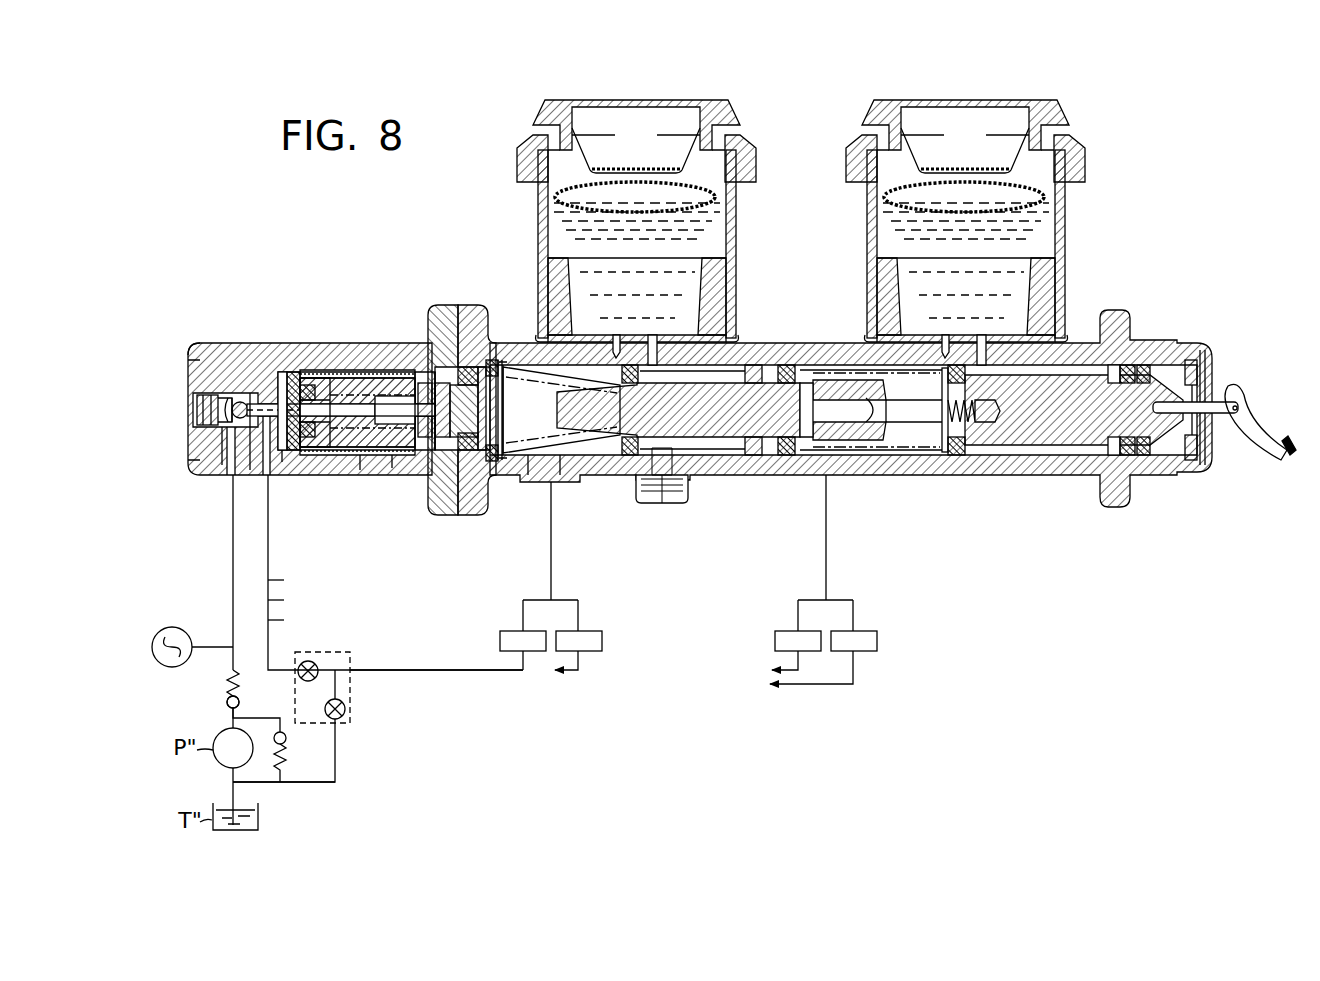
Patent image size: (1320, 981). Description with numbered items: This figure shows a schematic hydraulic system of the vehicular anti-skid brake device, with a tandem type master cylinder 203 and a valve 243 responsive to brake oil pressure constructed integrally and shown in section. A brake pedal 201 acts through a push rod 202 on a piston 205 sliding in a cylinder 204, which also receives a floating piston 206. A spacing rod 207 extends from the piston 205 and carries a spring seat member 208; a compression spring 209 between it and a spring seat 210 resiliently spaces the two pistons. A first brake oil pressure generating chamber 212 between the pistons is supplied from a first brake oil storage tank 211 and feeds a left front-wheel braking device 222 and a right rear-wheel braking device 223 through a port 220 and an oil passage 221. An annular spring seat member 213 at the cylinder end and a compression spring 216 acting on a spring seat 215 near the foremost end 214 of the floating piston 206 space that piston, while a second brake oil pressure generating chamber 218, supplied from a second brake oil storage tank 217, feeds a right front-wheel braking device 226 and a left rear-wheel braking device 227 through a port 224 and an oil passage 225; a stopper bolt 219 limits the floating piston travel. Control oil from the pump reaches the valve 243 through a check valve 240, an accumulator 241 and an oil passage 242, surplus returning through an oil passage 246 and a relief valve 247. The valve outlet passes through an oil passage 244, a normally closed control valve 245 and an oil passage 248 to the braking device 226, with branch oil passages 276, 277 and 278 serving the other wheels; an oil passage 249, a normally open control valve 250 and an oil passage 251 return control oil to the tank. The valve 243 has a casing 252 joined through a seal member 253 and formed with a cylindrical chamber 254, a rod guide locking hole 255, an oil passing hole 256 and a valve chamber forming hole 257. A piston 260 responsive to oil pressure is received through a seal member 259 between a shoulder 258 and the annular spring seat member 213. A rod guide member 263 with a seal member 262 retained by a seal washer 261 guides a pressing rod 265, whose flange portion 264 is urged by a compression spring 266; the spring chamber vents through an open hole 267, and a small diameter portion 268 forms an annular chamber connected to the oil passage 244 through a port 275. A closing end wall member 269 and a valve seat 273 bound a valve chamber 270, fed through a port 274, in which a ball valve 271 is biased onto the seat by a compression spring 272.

The brake pedal 201 is at (1280, 462).
The push rod 202 is at (1222, 420).
The tandem type master cylinder 203 is at (1088, 252).
The cylinder 204 is at (1022, 477).
The piston 205 is at (1038, 416).
The floating piston 206 is at (680, 421).
The spacing rod 207 is at (947, 456).
The spring seat member 208 is at (832, 438).
The compression spring 209 is at (830, 372).
The spring seat 210 is at (972, 440).
The first brake oil storage tank 211 is at (866, 227).
The first brake oil pressure generating chamber 212 is at (882, 435).
The annular spring seat member 213 is at (447, 420).
The foremost end 214 is at (562, 418).
The spring seat 215 is at (605, 455).
The compression spring 216 is at (518, 372).
The second brake oil storage tank 217 is at (540, 232).
The second brake oil pressure generating chamber 218 is at (528, 457).
The stopper bolt 219 is at (660, 503).
The port 220 is at (788, 455).
The oil passage 221 is at (828, 545).
The left front-wheel braking device 222 is at (785, 630).
The right rear-wheel braking device 223 is at (862, 630).
The port 224 is at (560, 460).
The oil passage 225 is at (552, 553).
The right front-wheel braking device 226 is at (505, 630).
The left rear-wheel braking device 227 is at (592, 630).
The check valve 240 is at (225, 704).
The accumulator 241 is at (170, 626).
The oil passage 242 is at (232, 557).
The valve responsive to brake oil pressure 243 is at (205, 342).
The oil passage 244 is at (272, 530).
The normally closed control valve 245 is at (314, 662).
The oil passage 246 is at (265, 718).
The relief valve 247 is at (288, 742).
The oil passage 248 is at (435, 668).
The oil passage 249 is at (336, 685).
The normally open control valve 250 is at (346, 710).
The oil passage 251 is at (338, 755).
The casing 252 is at (192, 370).
The seal member 253 is at (478, 490).
The cylindrical chamber 254 is at (395, 372).
The rod guide locking hole 255 is at (305, 378).
The oil passing hole 256 is at (290, 385).
The valve chamber forming hole 257 is at (232, 395).
The shoulder 258 is at (345, 372).
The seal member 259 is at (470, 450).
The piston responsive to oil pressure 260 is at (392, 468).
The seal washer 261 is at (282, 445).
The seal member 262 is at (312, 392).
The rod guide member 263 is at (338, 447).
The flange portion 264 is at (442, 400).
The pressing rod 265 is at (305, 437).
The compression spring 266 is at (418, 388).
The open hole 267 is at (360, 470).
The small diameter portion 268 is at (250, 470).
The closing end wall member 269 is at (197, 402).
The valve chamber 270 is at (198, 423).
The ball valve 271 is at (240, 418).
The compression spring 272 is at (252, 405).
The valve seat 273 is at (246, 402).
The port 274 is at (222, 465).
The port 275 is at (282, 462).
The oil passage 276 is at (284, 580).
The oil passage 277 is at (284, 600).
The oil passage 278 is at (284, 620).